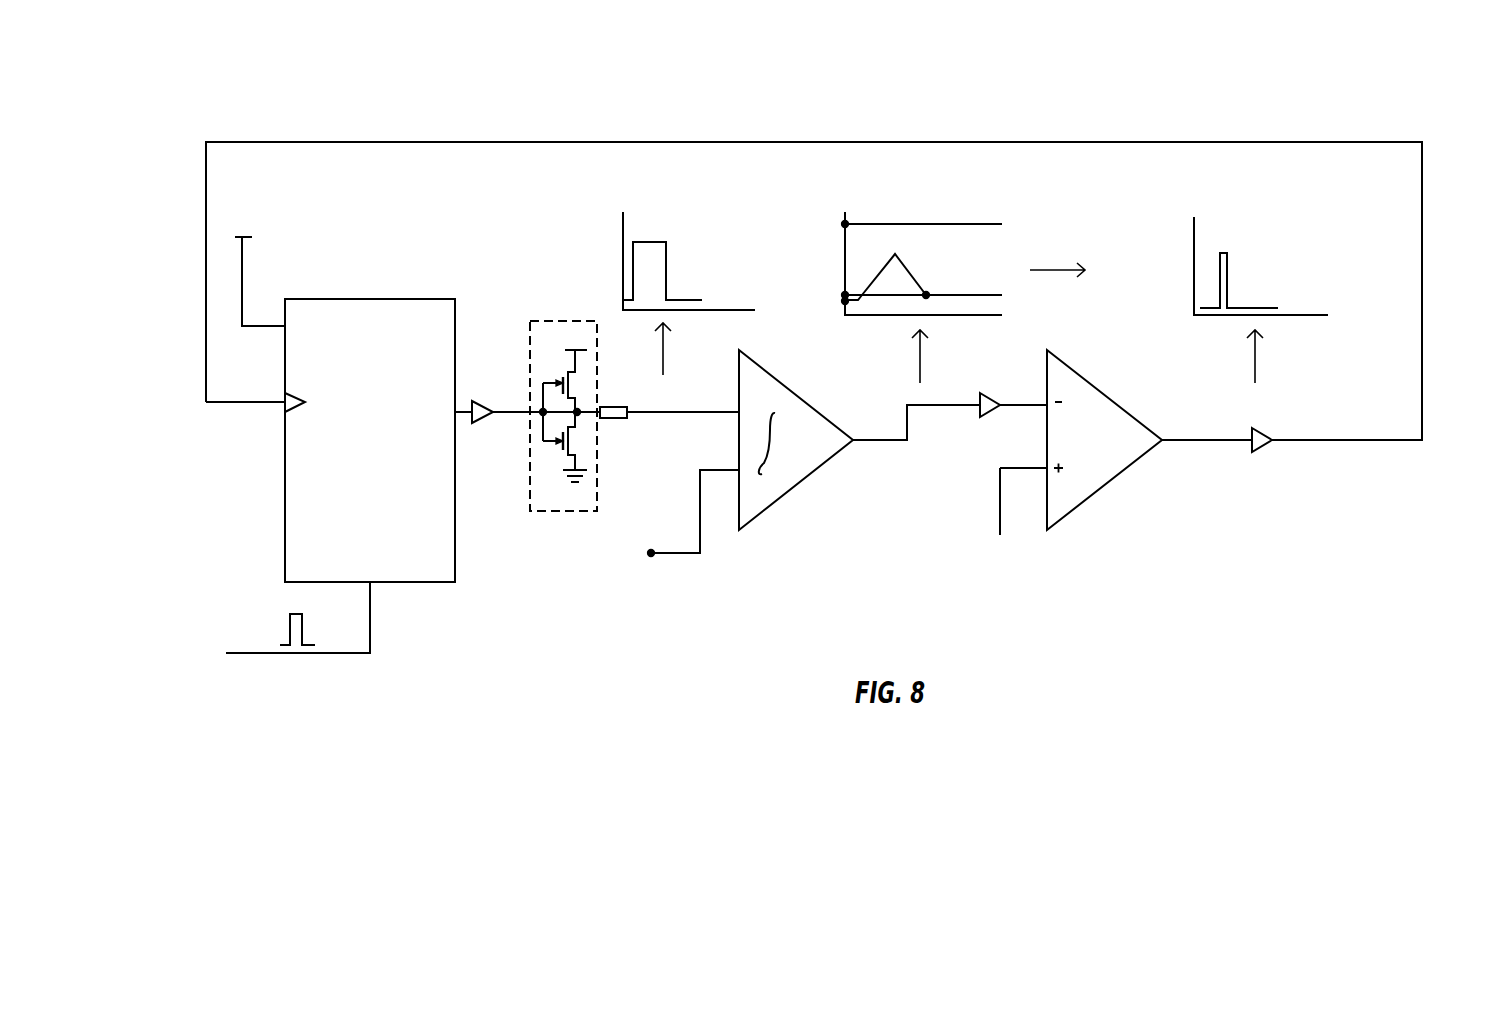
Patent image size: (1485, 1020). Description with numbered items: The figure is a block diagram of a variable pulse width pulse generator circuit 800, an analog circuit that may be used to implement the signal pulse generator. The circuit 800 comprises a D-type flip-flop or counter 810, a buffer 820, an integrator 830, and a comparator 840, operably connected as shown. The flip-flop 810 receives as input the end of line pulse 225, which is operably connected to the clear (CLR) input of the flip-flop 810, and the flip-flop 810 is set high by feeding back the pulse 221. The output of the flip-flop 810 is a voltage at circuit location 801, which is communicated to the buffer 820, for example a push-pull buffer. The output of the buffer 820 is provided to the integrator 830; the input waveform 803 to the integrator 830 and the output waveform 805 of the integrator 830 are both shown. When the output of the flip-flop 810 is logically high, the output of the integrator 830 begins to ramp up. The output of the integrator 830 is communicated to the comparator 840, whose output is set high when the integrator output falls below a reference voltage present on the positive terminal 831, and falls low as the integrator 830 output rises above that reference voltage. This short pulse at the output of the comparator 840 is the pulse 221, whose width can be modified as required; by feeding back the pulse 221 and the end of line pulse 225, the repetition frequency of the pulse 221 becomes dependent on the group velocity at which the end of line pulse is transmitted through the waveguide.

The variable pulse width pulse generator circuit 800 is at (317, 122).
The D-type flip-flop 810 is at (422, 320).
The circuit location 801 is at (516, 410).
The buffer 820 is at (588, 512).
The input waveform 803 is at (719, 276).
The output waveform 805 is at (973, 274).
The pulse 221 is at (1291, 289).
The positive terminal 831 is at (686, 527).
The integrator 830 is at (754, 500).
The comparator 840 is at (1098, 470).
The end of line pulse 225 is at (283, 625).